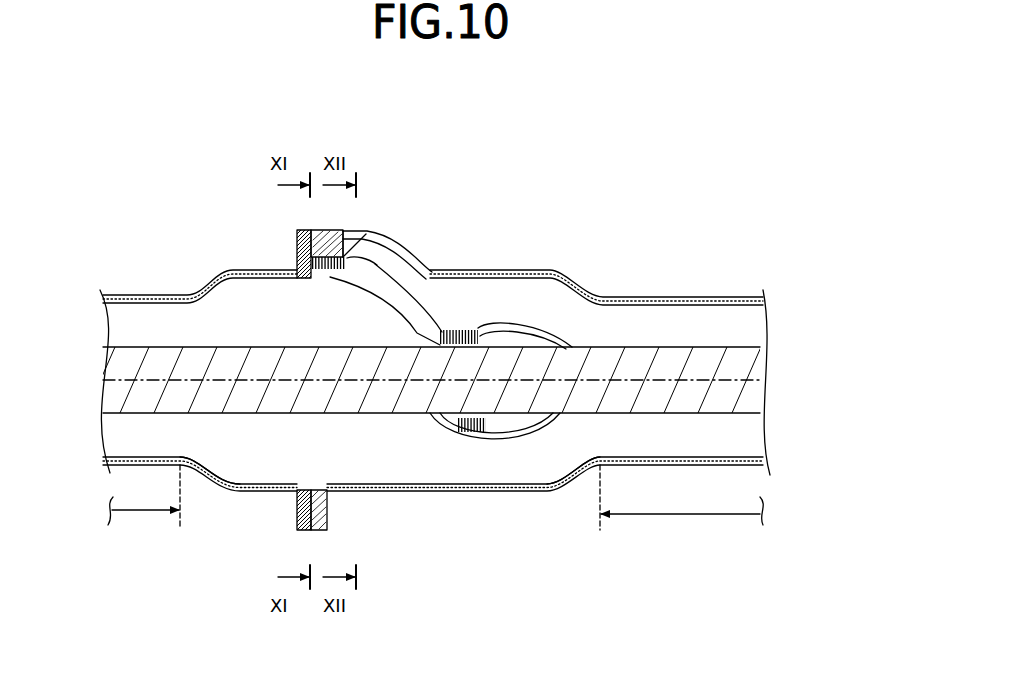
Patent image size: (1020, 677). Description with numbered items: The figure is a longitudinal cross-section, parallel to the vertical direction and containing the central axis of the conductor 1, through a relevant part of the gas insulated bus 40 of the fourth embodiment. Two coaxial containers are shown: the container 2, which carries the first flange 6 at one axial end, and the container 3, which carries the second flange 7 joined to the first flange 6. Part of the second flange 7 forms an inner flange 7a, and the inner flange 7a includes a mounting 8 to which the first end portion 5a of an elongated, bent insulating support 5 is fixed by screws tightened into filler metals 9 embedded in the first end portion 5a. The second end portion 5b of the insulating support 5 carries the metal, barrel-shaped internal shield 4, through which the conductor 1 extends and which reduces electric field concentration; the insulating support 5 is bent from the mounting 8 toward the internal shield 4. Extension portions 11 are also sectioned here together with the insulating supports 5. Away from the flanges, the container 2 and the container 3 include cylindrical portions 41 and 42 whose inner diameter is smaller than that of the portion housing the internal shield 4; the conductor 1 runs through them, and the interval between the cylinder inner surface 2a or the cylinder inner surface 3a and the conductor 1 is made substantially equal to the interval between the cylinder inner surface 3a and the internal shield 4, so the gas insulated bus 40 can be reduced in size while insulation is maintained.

The conductor 1 is at (718, 367).
The container 2 is at (135, 297).
The cylinder inner surface 2a is at (153, 460).
The container 3 is at (678, 296).
The cylinder inner surface 3a is at (497, 479).
The internal shield 4 is at (523, 320).
The insulating support 5 is at (450, 322).
The first end portion 5a is at (332, 262).
The second end portion 5b is at (462, 327).
The first flange 6 is at (297, 505).
The second flange 7 is at (327, 505).
The inner flange 7a is at (367, 242).
The mounting 8 is at (305, 280).
The filler metal 9 is at (410, 303).
The extension portion 11 is at (385, 256).
The gas insulated bus 40 is at (622, 128).
The cylindrical portion 41 is at (150, 513).
The cylindrical portion 42 is at (680, 515).